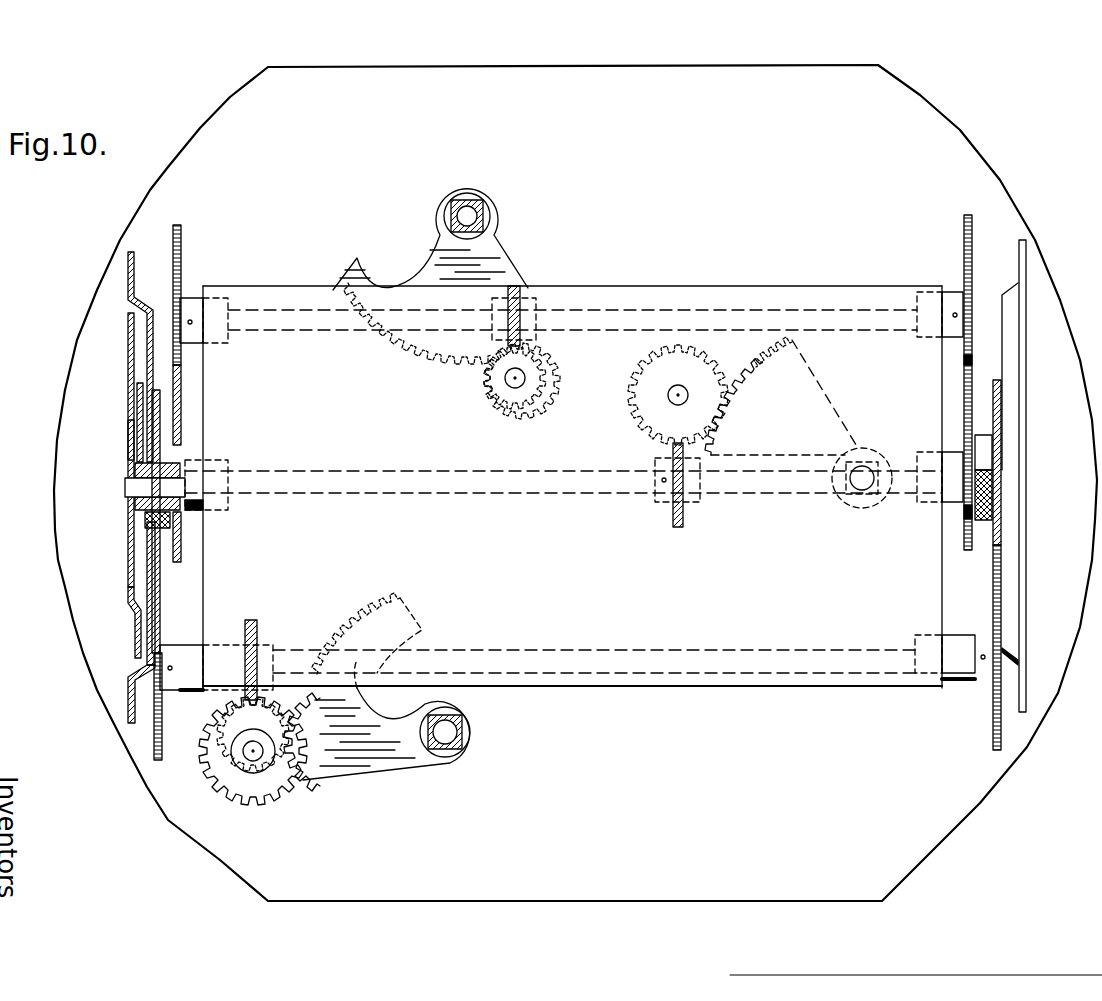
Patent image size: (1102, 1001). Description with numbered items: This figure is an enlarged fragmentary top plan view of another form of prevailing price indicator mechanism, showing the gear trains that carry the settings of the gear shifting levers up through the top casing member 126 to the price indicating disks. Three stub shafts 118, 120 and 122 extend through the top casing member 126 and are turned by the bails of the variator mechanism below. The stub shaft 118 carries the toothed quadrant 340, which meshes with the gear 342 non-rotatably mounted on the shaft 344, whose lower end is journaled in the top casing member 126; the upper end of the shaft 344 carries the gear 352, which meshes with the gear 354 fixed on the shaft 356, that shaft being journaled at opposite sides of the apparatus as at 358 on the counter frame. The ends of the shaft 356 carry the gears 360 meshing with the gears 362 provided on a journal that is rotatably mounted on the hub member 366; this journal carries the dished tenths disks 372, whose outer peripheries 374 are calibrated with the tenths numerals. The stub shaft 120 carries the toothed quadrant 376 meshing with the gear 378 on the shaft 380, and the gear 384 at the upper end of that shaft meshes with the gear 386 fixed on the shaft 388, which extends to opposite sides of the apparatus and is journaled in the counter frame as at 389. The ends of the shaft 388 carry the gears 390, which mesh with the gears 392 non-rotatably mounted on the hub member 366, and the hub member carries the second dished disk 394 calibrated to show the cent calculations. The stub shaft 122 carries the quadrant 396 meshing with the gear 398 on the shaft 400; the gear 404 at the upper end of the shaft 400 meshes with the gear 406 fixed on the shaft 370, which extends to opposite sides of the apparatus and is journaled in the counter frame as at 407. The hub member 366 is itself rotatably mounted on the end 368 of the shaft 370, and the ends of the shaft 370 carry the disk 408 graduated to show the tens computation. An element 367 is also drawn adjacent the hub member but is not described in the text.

The top casing member 126 is at (940, 140).
The shaft 388 is at (603, 305).
The journal 389 is at (207, 300).
The shaft 356 is at (475, 658).
The gears 390 is at (183, 250).
The gears 392 is at (178, 432).
The second dished disk 394 is at (130, 377).
The disk 408 is at (130, 440).
The hub member 366 is at (175, 468).
The end of the shaft 368 is at (165, 490).
The journal 407 is at (210, 472).
The shaft 370 is at (310, 485).
The collar 367 is at (180, 522).
The gears 362 is at (160, 568).
The gears 360 is at (155, 735).
The dished tenths disks 372 is at (133, 640).
The outer peripheries 374 is at (133, 688).
The journal 358 is at (196, 692).
The gear 354 is at (255, 625).
The toothed quadrant 376 is at (508, 260).
The stub shaft 120 is at (480, 215).
The gear 386 is at (525, 290).
The gear 384 is at (509, 410).
The gear 378 is at (540, 362).
The shaft 380 is at (525, 378).
The gear 404 is at (685, 370).
The gear 398 is at (710, 350).
The shaft 400 is at (690, 385).
The quadrant 396 is at (833, 410).
The gear 406 is at (678, 530).
The stub shaft 122 is at (858, 492).
The toothed quadrant 340 is at (360, 768).
The stub shaft 118 is at (440, 740).
The gear 342 is at (290, 780).
The gear 352 is at (222, 762).
The shaft 344 is at (256, 760).